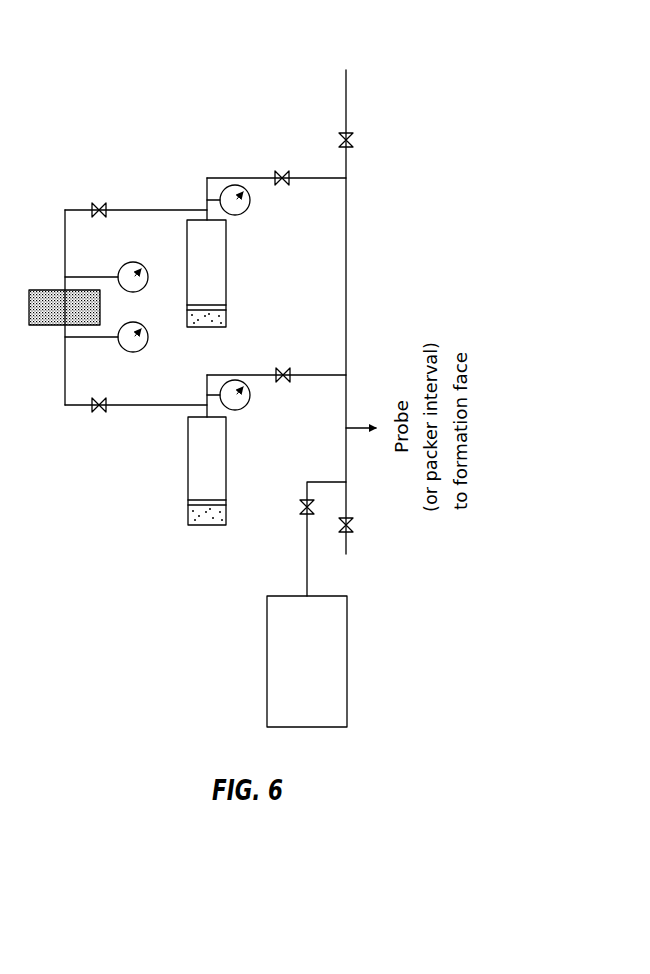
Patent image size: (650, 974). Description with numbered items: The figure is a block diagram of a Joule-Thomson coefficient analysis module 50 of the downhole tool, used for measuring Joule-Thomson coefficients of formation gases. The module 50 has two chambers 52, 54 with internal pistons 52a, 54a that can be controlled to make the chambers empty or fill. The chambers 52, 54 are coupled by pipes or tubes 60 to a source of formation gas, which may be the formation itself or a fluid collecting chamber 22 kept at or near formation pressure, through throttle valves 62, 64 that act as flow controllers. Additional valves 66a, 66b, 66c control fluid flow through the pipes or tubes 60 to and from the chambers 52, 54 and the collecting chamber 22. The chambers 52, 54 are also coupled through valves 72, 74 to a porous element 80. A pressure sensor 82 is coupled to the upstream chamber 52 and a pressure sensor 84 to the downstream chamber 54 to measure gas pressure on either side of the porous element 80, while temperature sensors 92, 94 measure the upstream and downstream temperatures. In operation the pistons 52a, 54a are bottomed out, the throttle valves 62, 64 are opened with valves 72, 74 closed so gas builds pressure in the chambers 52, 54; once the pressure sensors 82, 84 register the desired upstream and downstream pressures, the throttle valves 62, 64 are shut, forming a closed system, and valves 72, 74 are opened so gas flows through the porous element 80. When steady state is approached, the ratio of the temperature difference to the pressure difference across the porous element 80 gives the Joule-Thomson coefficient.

The Joule-Thomson coefficient analysis module 50 is at (100, 104).
The fluid collecting chamber 22 is at (347, 668).
The upstream chamber 52 is at (205, 328).
The internal piston 52a is at (227, 306).
The downstream chamber 54 is at (188, 518).
The internal piston 54a is at (188, 500).
The pipes or tubes 60 is at (173, 208).
The throttle valve 62 is at (280, 171).
The throttle valve 64 is at (282, 372).
The valve 66a is at (354, 140).
The valve 66b is at (352, 527).
The valve 66c is at (300, 510).
The valve 72 is at (96, 204).
The valve 74 is at (97, 412).
The porous element 80 is at (48, 290).
The pressure sensor 82 is at (250, 200).
The pressure sensor 84 is at (238, 411).
The temperature sensor 92 is at (137, 262).
The temperature sensor 94 is at (137, 322).